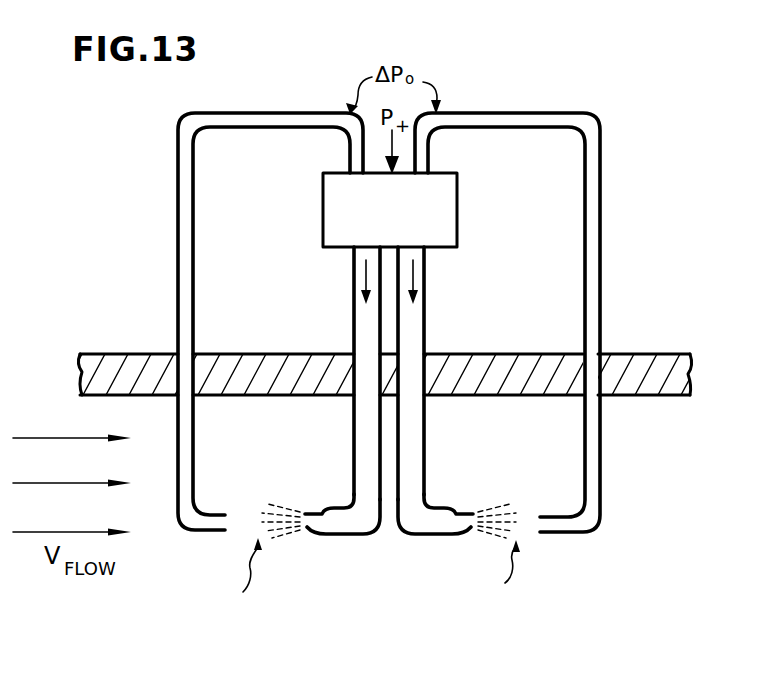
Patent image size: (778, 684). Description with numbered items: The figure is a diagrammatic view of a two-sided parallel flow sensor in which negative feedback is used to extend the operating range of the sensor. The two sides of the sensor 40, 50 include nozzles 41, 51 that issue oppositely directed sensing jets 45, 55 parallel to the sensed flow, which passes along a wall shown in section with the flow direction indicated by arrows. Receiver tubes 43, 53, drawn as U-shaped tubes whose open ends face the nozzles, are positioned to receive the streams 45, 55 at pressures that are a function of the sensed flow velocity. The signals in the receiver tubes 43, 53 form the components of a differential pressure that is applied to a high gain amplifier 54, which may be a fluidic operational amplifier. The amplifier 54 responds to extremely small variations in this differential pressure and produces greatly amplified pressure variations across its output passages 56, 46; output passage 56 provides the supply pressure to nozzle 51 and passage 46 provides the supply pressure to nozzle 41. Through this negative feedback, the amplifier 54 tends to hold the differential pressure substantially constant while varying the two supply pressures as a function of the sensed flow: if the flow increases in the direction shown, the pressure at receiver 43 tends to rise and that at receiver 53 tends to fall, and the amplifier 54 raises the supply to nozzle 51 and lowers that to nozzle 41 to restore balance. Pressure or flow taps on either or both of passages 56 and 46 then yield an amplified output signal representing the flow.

The high gain amplifier 54 is at (458, 221).
The output passage 56 is at (354, 316).
The output passage 46 is at (424, 337).
The nozzle 51 is at (312, 521).
The nozzle 41 is at (464, 522).
The sensing jet 55 is at (276, 506).
The sensing jet 45 is at (500, 477).
The receiver tube 53 is at (222, 523).
The receiver tube 43 is at (556, 523).
The sensor side 50 is at (262, 580).
The sensor side 40 is at (494, 572).